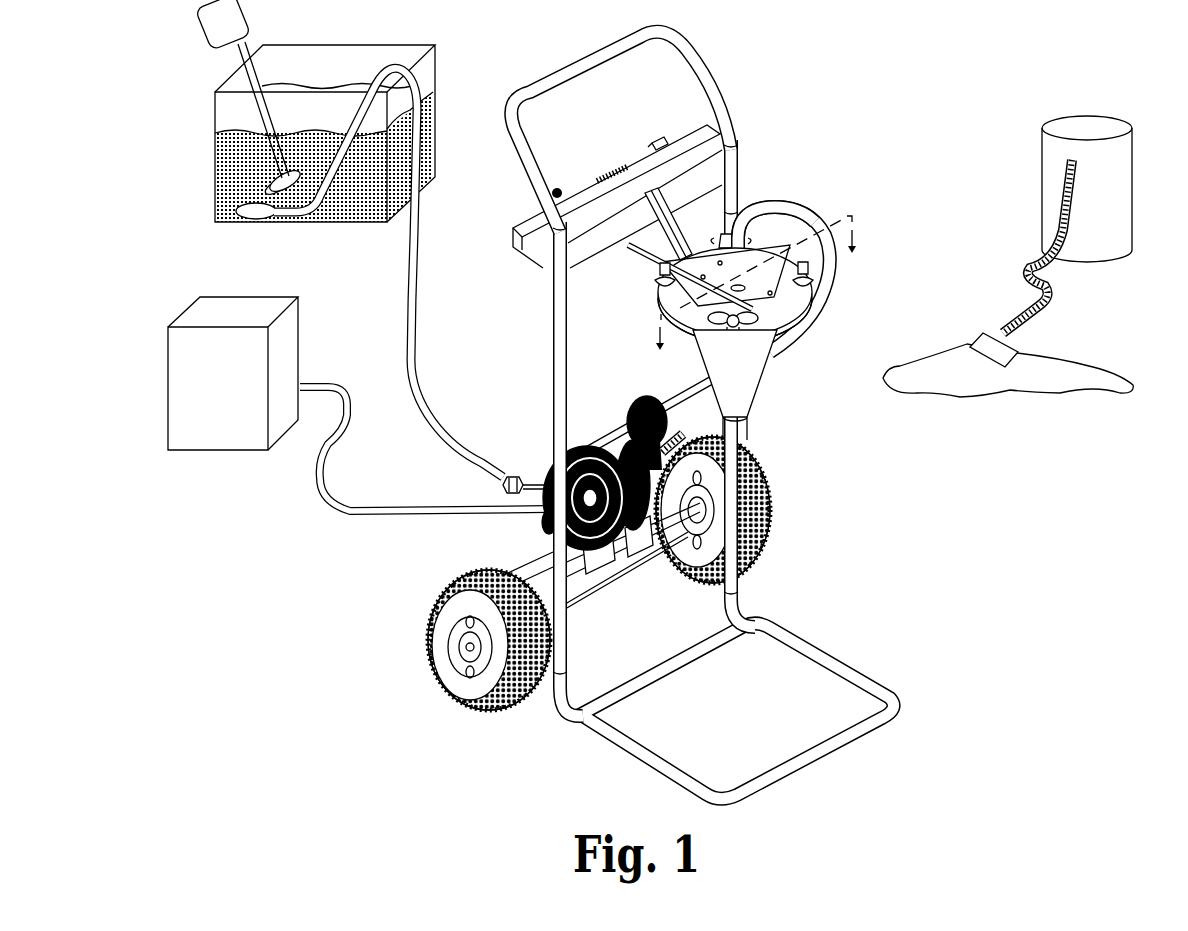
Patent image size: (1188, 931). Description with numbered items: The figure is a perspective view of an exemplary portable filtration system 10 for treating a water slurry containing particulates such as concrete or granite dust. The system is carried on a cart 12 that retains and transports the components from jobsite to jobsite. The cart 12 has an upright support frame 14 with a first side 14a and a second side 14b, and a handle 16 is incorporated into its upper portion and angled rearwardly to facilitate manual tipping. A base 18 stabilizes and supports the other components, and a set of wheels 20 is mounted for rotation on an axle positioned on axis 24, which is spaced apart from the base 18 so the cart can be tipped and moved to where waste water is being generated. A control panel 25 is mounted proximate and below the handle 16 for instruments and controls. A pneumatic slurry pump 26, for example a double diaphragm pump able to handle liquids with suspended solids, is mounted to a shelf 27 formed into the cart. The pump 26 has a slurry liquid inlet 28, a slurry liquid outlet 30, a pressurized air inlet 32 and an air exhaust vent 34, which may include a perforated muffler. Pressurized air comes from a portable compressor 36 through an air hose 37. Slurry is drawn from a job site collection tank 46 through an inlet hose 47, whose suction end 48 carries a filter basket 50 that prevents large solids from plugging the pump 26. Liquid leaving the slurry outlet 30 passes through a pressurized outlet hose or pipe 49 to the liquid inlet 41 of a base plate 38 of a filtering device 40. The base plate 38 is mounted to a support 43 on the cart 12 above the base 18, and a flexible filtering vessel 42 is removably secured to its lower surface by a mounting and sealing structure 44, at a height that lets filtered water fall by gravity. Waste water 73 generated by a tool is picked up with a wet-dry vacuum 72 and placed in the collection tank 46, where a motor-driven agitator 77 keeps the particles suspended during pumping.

The portable filtration system 10 is at (887, 206).
The cart 12 is at (553, 357).
The upright support frame 14 is at (687, 411).
The first side 14a is at (553, 438).
The second side 14b is at (735, 432).
The handle 16 is at (566, 80).
The base 18 is at (840, 672).
The wheels 20 is at (741, 510).
The axis 24 is at (445, 666).
The control panel 25 is at (520, 235).
The pneumatic slurry pump 26 is at (550, 545).
The shelf 27 is at (767, 548).
The slurry liquid inlet 28 is at (503, 485).
The slurry liquid outlet 30 is at (635, 398).
The pressurized air inlet 32 is at (548, 522).
The air exhaust vent 34 is at (685, 443).
The portable compressor 36 is at (244, 312).
The air hose 37 is at (355, 506).
The base plate 38 is at (795, 210).
The filtering device 40 is at (830, 310).
The liquid inlet 41 is at (780, 200).
The flexible filtering vessel 42 is at (748, 380).
The support 43 is at (690, 240).
The mounting and sealing structure 44 is at (747, 276).
The collection tank 46 is at (432, 68).
The inlet hose 47 is at (417, 300).
The suction end 48 is at (225, 213).
The outlet hose or pipe 49 is at (824, 229).
The filter basket 50 is at (250, 207).
The wet-dry vacuum 72 is at (1120, 158).
The waste water 73 is at (1095, 375).
The agitator 77 is at (268, 136).